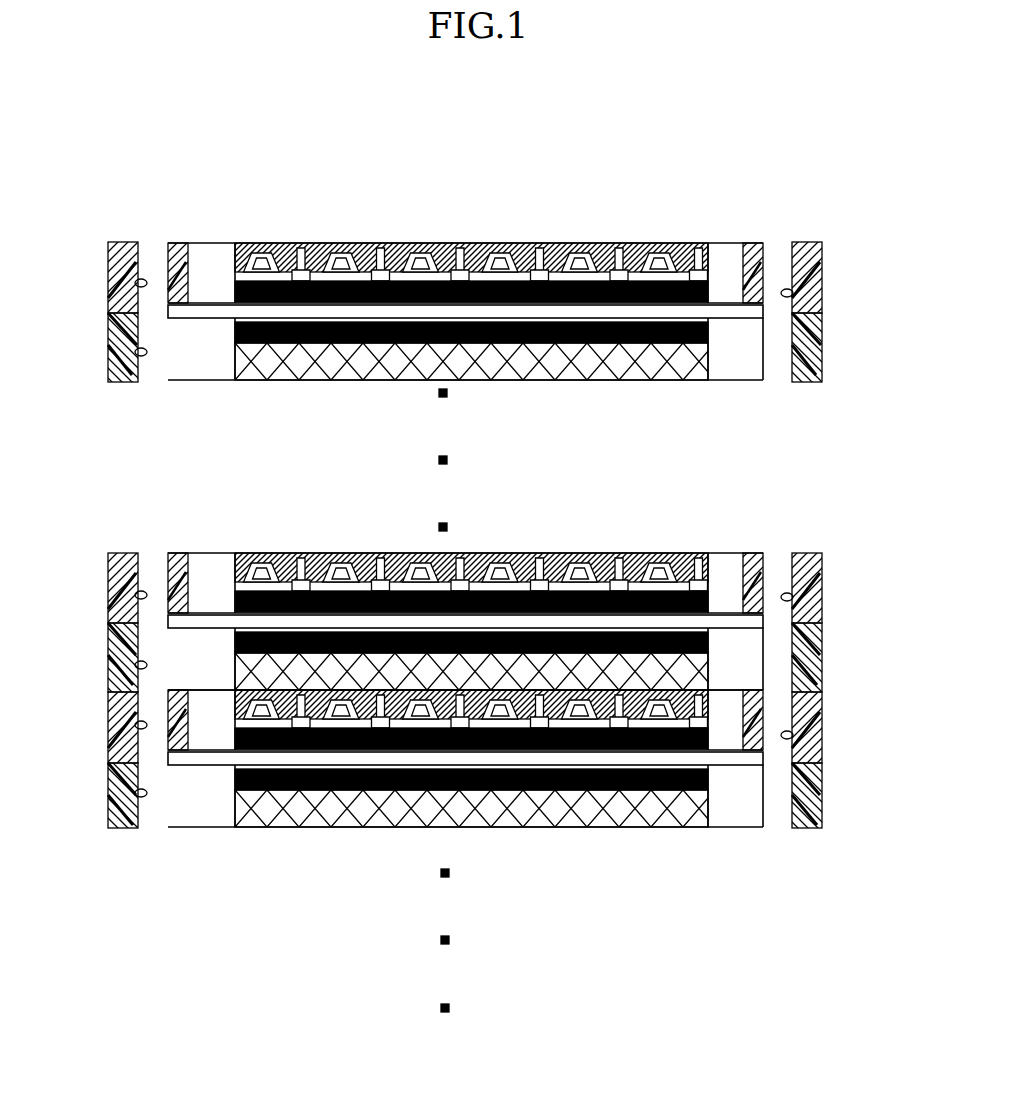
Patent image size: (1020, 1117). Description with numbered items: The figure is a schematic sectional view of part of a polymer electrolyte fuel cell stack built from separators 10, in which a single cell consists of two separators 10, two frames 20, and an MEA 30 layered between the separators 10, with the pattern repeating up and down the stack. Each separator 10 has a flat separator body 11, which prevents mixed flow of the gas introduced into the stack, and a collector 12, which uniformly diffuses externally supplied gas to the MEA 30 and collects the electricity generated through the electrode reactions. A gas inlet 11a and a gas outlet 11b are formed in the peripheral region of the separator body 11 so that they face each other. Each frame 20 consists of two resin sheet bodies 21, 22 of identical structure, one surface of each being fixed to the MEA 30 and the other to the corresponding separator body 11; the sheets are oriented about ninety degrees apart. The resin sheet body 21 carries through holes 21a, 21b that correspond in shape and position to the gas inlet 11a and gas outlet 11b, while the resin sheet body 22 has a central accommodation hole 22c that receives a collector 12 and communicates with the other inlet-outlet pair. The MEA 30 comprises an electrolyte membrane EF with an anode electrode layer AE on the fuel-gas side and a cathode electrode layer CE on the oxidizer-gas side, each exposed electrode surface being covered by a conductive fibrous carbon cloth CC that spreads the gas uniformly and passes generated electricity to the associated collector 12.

The separator 10 is at (482, 536).
The separator body 11 is at (482, 536).
The gas inlet 11a is at (789, 242).
The gas outlet 11b is at (172, 242).
The collector 12 is at (353, 243).
The frame 20 is at (480, 535).
The resin sheet body 21 is at (822, 265).
The through hole 21a is at (793, 292).
The through hole 21b is at (135, 288).
The resin sheet body 22 is at (822, 356).
The accommodation hole 22c is at (135, 357).
The MEA 30 is at (211, 328).
The anode electrode layer AE is at (233, 299).
The cathode electrode layer CE is at (232, 322).
The carbon cloth CC is at (709, 292).
The electrolyte membrane EF is at (739, 316).